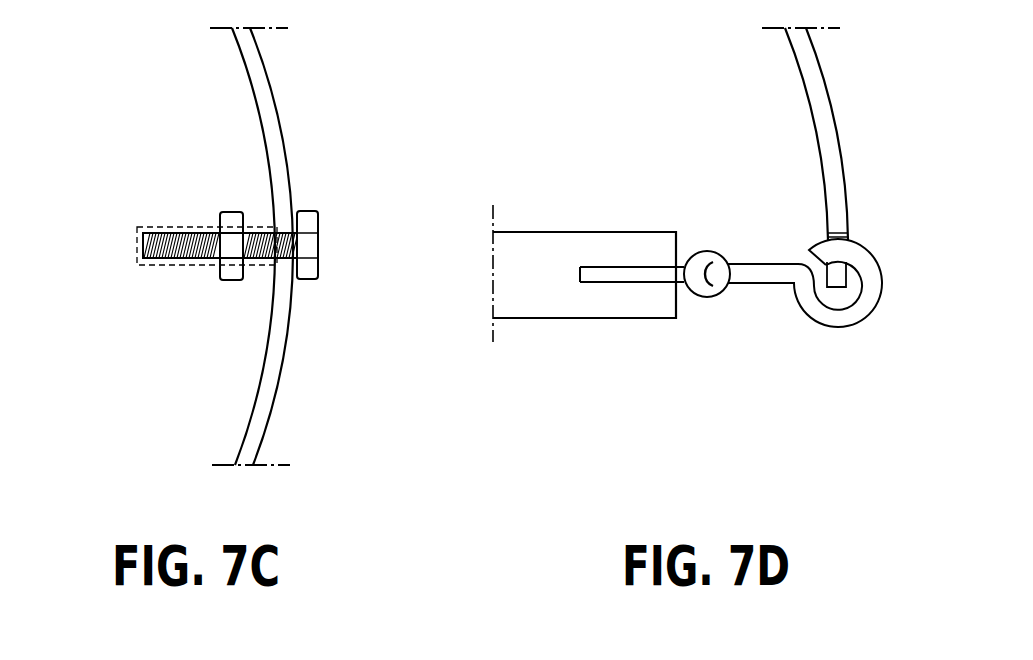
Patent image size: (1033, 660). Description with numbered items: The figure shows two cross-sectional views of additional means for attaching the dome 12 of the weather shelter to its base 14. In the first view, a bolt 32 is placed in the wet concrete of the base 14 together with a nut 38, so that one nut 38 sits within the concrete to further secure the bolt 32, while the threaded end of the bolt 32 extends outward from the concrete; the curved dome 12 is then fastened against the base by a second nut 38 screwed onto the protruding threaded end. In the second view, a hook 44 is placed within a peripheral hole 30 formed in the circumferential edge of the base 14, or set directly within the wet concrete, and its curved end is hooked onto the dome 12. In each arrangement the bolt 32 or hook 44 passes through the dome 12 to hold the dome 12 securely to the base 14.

In FIG. 7C, the dome 12 is at (272, 102).
In FIG. 7D, the dome 12 is at (825, 100).
In FIG. 7C, the base 14 is at (95, 77).
In FIG. 7D, the base 14 is at (547, 237).
In FIG. 7C, the peripheral holes 30 is at (155, 233).
In FIG. 7C, the bolt 32 is at (313, 247).
In FIG. 7C, the nut 38 is at (230, 215).
In FIG. 7D, the hook 44 is at (845, 320).